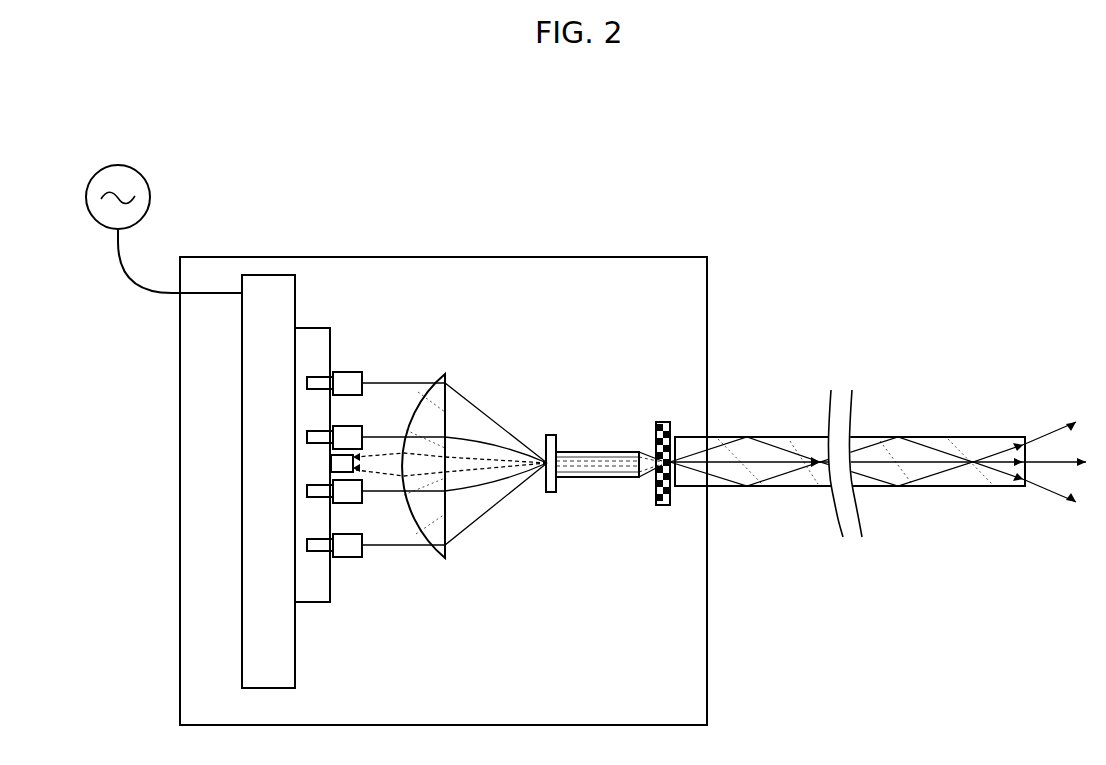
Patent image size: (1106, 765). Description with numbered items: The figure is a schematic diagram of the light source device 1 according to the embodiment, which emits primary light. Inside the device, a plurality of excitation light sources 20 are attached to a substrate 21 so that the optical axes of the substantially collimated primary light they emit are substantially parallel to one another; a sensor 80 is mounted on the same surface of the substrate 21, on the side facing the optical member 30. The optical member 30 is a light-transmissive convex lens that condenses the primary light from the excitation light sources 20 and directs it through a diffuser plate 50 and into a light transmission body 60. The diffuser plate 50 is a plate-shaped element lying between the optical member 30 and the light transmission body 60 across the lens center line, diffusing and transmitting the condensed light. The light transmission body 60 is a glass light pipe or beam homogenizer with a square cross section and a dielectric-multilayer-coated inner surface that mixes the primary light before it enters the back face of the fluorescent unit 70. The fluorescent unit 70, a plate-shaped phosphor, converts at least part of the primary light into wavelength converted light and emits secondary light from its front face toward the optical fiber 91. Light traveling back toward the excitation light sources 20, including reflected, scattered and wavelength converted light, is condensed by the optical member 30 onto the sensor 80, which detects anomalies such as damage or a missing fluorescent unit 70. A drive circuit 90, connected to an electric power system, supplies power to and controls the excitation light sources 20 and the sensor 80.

The light source device 1 is at (660, 254).
The excitation light sources 20 is at (361, 370).
The substrate 21 is at (327, 325).
The optical member 30 is at (438, 386).
The diffuser plate 50 is at (551, 433).
The light transmission body 60 is at (588, 450).
The fluorescent unit 70 is at (662, 420).
The sensor 80 is at (331, 463).
The drive circuit 90 is at (278, 274).
The optical fiber 91 is at (738, 435).